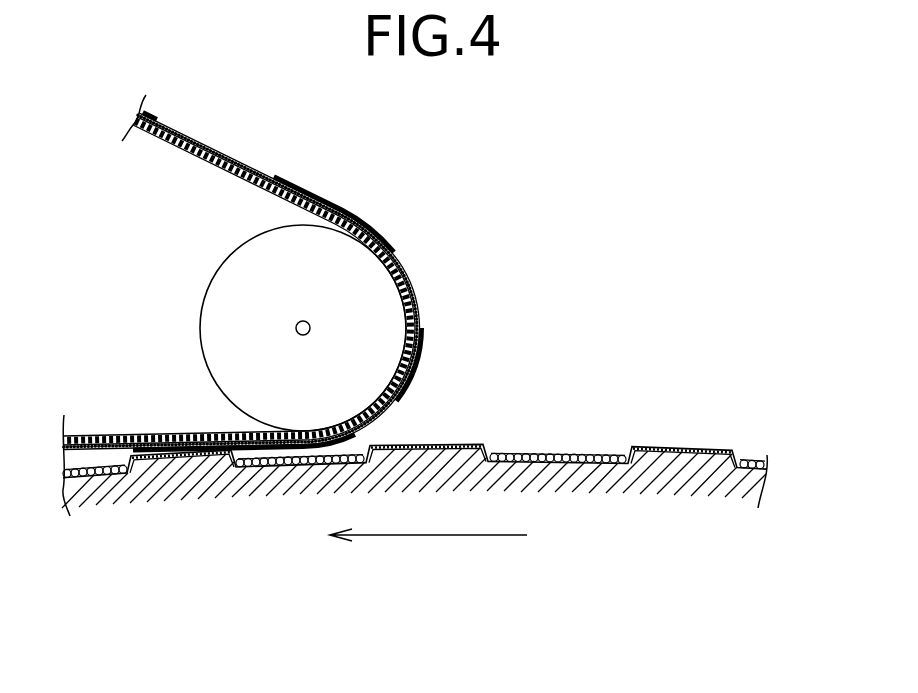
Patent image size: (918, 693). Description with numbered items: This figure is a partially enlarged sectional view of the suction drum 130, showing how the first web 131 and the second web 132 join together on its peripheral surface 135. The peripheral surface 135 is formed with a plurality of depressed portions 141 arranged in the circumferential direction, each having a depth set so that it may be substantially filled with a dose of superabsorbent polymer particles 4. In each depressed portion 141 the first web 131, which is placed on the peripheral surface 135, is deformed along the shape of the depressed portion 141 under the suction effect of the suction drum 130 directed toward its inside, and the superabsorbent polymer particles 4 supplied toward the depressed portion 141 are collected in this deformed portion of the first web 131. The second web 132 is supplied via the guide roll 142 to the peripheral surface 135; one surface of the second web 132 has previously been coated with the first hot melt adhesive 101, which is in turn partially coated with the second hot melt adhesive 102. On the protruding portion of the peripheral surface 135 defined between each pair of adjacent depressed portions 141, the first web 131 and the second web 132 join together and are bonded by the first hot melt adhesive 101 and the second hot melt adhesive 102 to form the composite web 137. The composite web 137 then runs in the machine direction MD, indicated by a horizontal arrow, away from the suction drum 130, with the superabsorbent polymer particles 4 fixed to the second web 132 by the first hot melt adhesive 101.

The superabsorbent polymer particles 4 is at (549, 454).
The first hot melt adhesive 101 is at (414, 279).
The second hot melt adhesive 102 is at (416, 372).
The suction drum 130 is at (623, 545).
The first web 131 is at (660, 449).
The second web 132 is at (195, 157).
The peripheral surface 135 is at (702, 451).
The composite web 137 is at (142, 424).
The depressed portions 141 is at (495, 452).
The guide roll 142 is at (215, 268).
The machine direction MD is at (426, 536).